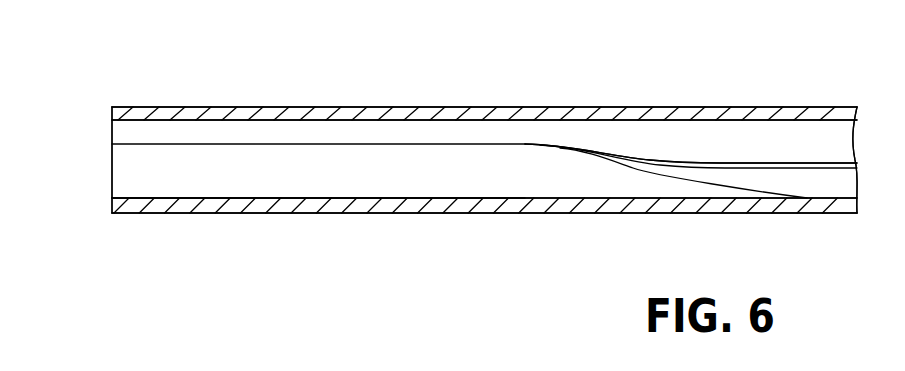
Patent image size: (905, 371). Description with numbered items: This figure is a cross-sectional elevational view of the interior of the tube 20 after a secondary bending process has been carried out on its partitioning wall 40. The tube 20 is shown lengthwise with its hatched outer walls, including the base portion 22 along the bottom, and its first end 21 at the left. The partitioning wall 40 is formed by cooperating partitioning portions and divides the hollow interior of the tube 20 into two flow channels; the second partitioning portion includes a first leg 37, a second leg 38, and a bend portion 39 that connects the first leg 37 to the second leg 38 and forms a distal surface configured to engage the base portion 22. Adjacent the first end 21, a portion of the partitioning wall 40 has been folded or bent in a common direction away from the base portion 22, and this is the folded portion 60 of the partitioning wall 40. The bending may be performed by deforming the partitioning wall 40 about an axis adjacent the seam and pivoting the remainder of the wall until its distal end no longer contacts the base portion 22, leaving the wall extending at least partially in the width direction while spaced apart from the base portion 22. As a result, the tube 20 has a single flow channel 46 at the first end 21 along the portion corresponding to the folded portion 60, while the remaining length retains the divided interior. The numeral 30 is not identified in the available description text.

The tube 20 is at (118, 96).
The first end 21 is at (112, 153).
The base portion 22 is at (758, 202).
The tubular body 30 is at (685, 112).
The first leg 37 is at (743, 138).
The second leg 38 is at (787, 186).
The bend portion 39 is at (846, 204).
The partitioning wall 40 is at (794, 137).
The single flow channel 46 is at (203, 182).
The folded portion 60 is at (292, 144).